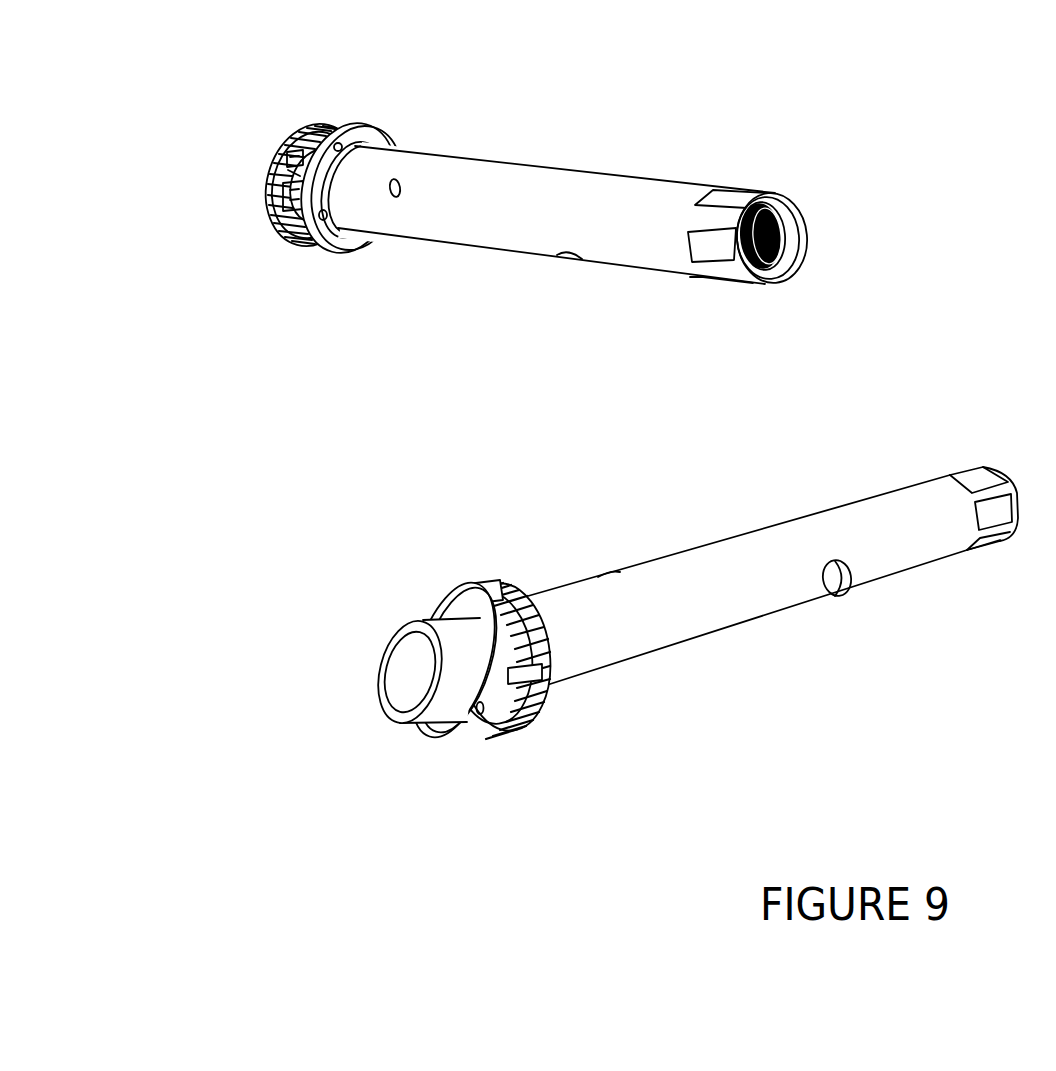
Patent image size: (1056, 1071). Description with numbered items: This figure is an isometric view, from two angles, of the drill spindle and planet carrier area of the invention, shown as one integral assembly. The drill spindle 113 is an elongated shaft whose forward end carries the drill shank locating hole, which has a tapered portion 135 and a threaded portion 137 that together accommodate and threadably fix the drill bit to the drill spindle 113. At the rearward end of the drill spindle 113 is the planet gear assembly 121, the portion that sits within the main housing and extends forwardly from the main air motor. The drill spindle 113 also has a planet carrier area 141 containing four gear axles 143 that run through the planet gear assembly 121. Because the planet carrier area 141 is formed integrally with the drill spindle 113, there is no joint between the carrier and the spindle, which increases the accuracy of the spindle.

The drill spindle 113 is at (484, 157).
The planet gear assembly 121 is at (275, 233).
The gear axles 143 is at (341, 145).
The tapered portion 135 is at (793, 249).
The threaded portion 137 is at (788, 204).
The planet carrier area 141 is at (427, 592).